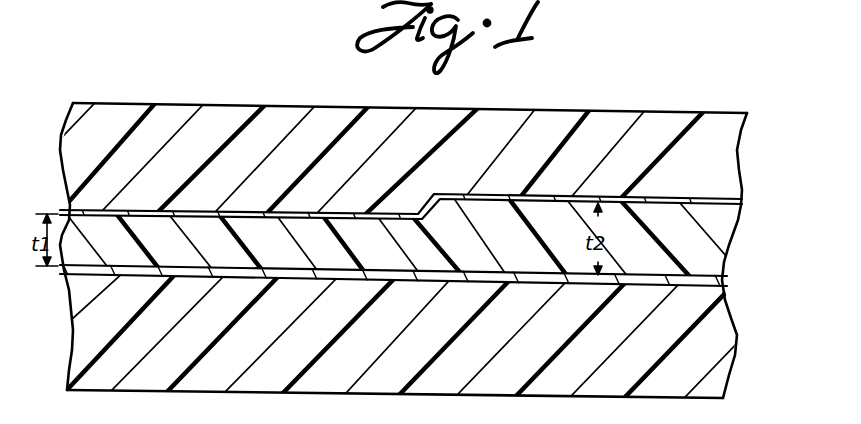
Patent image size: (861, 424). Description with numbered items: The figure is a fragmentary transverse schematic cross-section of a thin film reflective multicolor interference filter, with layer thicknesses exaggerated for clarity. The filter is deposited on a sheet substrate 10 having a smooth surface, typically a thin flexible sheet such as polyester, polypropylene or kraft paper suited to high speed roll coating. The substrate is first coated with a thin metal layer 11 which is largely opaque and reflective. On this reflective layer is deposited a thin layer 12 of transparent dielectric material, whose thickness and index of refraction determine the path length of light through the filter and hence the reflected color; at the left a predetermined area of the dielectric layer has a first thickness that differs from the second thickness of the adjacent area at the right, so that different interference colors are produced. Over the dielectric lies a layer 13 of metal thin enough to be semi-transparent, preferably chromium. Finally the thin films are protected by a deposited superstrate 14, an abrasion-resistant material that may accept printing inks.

The sheet substrate 10 is at (735, 338).
The thin metal layer 11 is at (724, 283).
The dielectric layer 12 is at (738, 239).
The semi-transparent metal layer 13 is at (722, 199).
The superstrate 14 is at (742, 160).